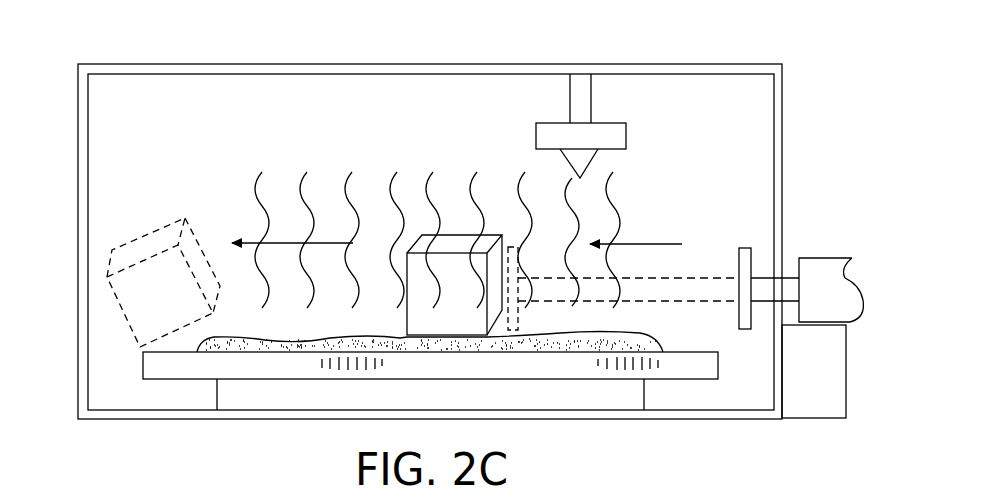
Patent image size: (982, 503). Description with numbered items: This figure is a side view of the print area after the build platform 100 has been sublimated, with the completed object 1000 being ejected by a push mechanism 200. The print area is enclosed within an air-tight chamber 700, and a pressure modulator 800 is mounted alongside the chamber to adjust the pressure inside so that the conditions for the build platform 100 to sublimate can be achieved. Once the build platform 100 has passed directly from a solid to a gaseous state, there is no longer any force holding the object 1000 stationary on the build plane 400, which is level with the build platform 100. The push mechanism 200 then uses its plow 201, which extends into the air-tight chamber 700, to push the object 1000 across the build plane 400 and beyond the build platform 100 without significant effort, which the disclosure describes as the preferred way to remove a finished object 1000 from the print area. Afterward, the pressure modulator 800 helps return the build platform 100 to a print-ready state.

The build platform 100 is at (131, 394).
The push mechanism 200 is at (834, 244).
The plow 201 is at (740, 248).
The build plane 400 is at (143, 362).
The air-tight chamber 700 is at (742, 64).
The pressure modulator 800 is at (846, 371).
The completed object 1000 is at (146, 236).